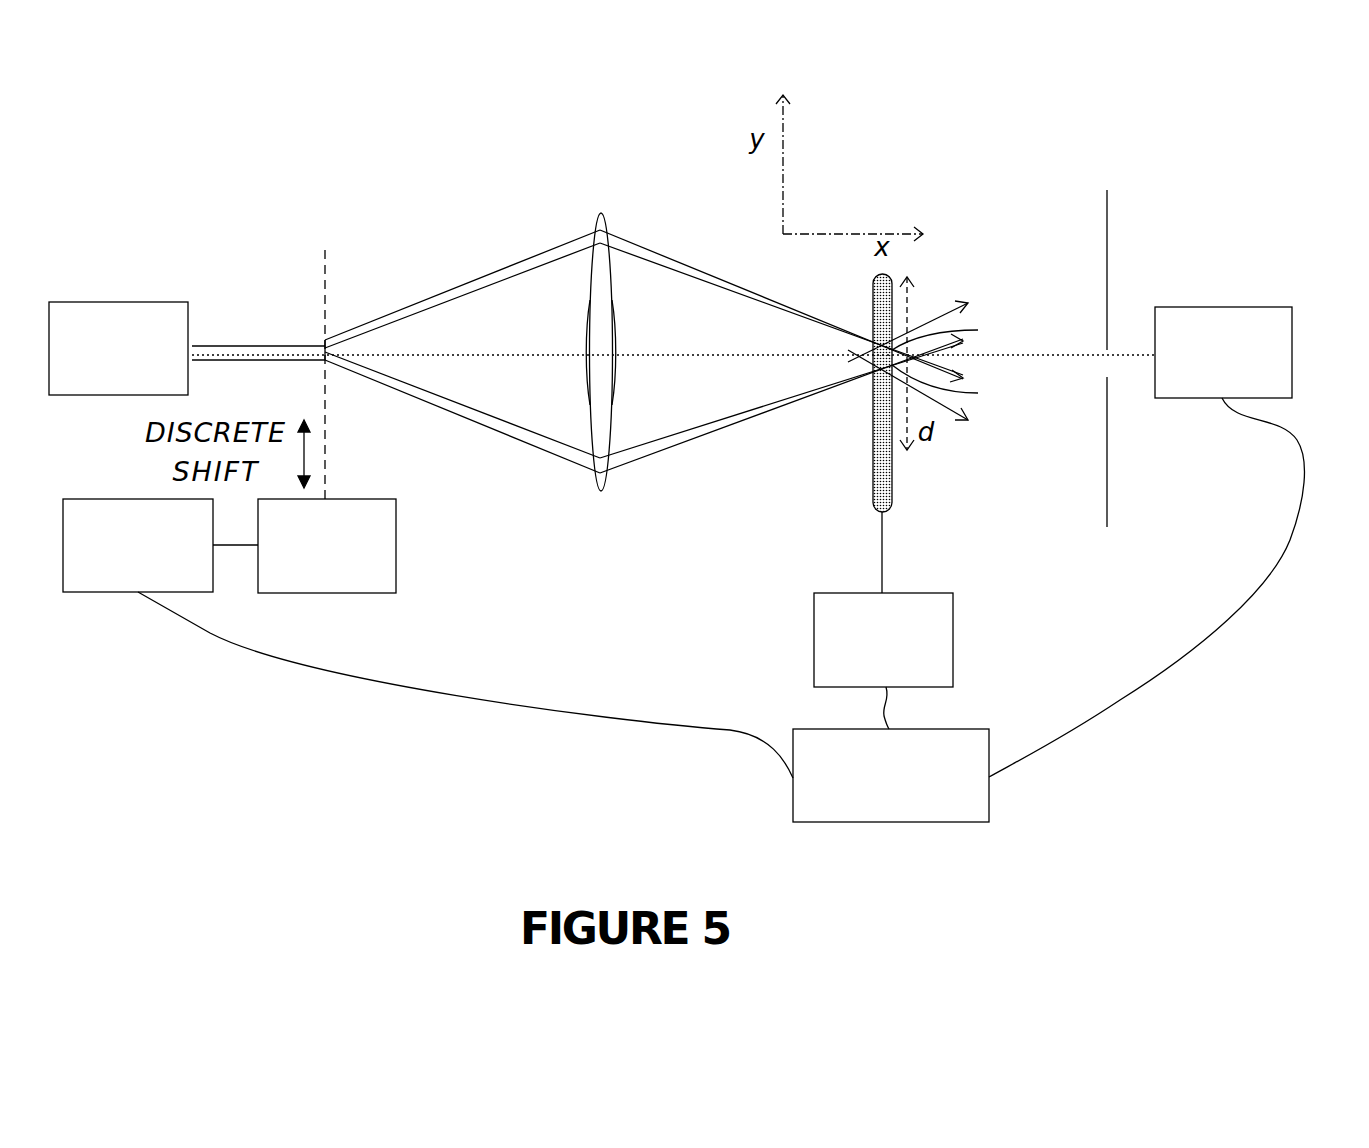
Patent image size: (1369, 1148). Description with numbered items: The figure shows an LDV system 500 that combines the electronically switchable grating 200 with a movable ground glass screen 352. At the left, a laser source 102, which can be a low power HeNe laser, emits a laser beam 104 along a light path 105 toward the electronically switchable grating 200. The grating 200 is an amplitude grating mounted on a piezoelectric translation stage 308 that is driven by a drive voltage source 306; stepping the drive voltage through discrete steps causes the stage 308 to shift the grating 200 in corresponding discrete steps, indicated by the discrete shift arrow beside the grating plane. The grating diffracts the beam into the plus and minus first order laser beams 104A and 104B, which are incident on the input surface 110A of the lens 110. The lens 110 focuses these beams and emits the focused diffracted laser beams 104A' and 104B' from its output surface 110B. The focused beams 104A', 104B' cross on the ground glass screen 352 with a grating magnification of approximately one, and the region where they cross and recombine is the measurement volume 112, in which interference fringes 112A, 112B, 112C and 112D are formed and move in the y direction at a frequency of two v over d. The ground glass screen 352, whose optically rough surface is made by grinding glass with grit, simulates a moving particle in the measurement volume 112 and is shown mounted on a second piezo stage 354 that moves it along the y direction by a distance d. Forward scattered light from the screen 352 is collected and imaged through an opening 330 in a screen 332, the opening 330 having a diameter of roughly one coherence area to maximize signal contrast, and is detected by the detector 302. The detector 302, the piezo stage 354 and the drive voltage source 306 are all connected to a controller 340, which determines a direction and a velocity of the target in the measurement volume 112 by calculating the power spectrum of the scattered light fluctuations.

The LDV system 500 is at (342, 128).
The laser source 102 is at (140, 302).
The laser beam 104 is at (300, 352).
The first order diffracted laser beam 104A is at (462, 276).
The first order diffracted laser beam 104B is at (462, 418).
The focused diffracted laser beam 104A' is at (781, 292).
The focused diffracted laser beam 104B' is at (781, 412).
The light path 105 is at (487, 353).
The lens 110 is at (601, 490).
The input surface 110A is at (590, 372).
The output surface 110B is at (612, 372).
The measurement volume 112 is at (873, 337).
The fringe 112A is at (873, 356).
The fringe 112B is at (978, 330).
The fringe 112C is at (978, 393).
The fringe 112D is at (873, 366).
The electronically switchable grating 200 is at (323, 258).
The detector 302 is at (1246, 307).
The drive voltage source 306 is at (135, 499).
The piezoelectric translation stage 308 is at (396, 520).
The opening 330 is at (1113, 365).
The screen 332 is at (1105, 228).
The controller 340 is at (990, 800).
The ground glass screen 352 is at (893, 490).
The piezo stage 354 is at (953, 615).